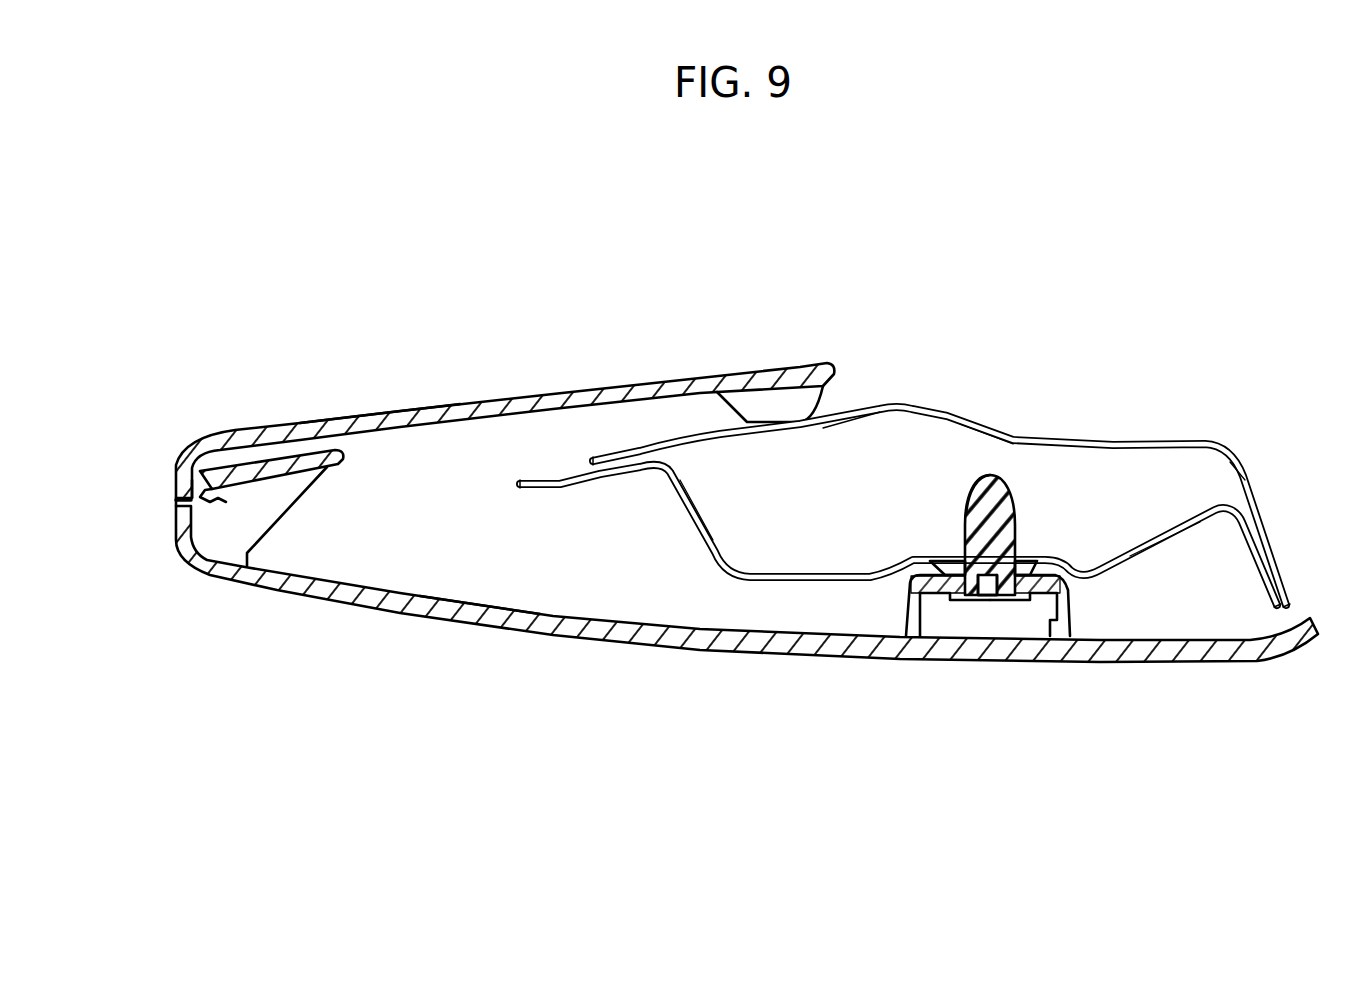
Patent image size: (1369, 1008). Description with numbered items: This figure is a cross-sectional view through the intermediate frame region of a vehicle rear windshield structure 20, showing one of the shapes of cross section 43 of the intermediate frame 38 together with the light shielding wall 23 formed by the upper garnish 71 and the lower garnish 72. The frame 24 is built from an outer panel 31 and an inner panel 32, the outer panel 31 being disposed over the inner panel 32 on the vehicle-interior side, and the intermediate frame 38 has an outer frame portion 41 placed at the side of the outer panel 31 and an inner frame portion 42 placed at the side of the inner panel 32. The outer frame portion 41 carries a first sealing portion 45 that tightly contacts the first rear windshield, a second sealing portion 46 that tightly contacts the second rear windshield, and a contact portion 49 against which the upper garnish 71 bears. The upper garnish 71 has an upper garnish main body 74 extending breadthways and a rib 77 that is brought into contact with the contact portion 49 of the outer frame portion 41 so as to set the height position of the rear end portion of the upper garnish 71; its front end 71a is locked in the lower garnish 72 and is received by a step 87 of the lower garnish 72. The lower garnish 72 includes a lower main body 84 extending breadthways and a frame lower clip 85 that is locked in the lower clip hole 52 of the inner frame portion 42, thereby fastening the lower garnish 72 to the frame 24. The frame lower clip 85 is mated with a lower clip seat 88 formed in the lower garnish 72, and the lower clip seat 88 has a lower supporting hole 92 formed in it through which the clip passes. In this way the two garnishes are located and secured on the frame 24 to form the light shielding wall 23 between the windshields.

The vehicle rear windshield structure 20 is at (193, 175).
The light shielding wall 23 is at (457, 232).
The frame 24 is at (803, 822).
The outer panel 31 is at (723, 473).
The inner panel 32 is at (1173, 552).
The intermediate frame 38 is at (1163, 740).
The outer frame portion 41 is at (800, 430).
The inner frame portion 42 is at (1127, 568).
The cross section 43 is at (907, 478).
The first sealing portion 45 is at (1010, 455).
The second sealing portion 46 is at (1262, 533).
The contact portion 49 is at (855, 412).
The lower clip hole 52 is at (1014, 523).
The upper garnish 71 is at (366, 411).
The front end 71a is at (175, 485).
The lower garnish 72 is at (499, 608).
The upper garnish main body 74 is at (400, 415).
The rib 77 is at (778, 408).
The lower main body 84 is at (473, 604).
The frame lower clip 85 is at (993, 480).
The step 87 is at (176, 500).
The lower clip seat 88 is at (1057, 580).
The lower supporting hole 92 is at (990, 590).